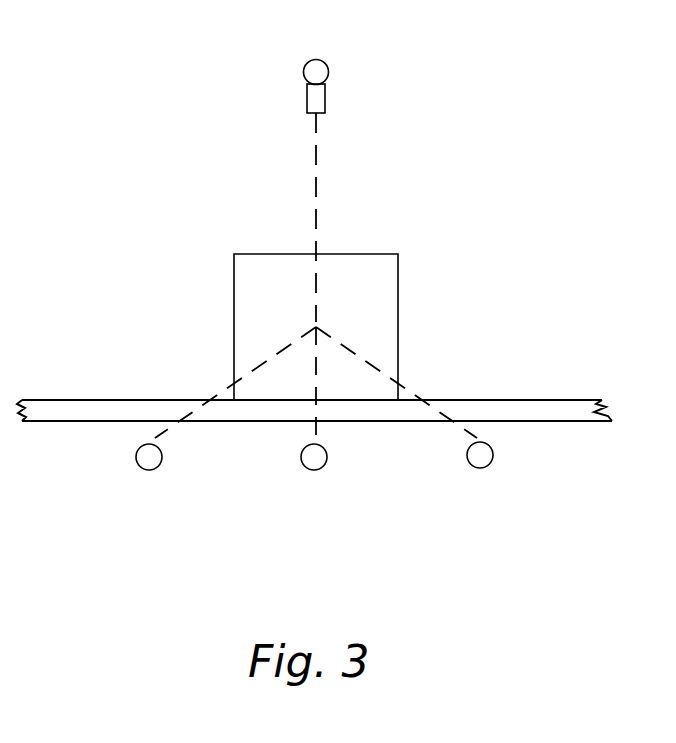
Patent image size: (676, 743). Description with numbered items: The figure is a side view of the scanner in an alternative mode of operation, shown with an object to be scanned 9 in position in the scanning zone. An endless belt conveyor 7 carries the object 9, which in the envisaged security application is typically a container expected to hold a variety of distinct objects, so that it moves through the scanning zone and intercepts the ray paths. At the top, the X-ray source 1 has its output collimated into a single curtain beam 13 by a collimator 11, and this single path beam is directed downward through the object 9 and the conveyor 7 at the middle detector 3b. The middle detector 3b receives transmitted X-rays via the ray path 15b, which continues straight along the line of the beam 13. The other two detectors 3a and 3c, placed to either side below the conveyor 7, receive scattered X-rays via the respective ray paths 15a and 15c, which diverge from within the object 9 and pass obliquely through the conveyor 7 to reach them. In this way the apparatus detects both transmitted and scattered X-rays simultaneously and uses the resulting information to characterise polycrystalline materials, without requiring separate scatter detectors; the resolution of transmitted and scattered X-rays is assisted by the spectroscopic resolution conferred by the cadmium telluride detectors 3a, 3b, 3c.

The X-ray source 1 is at (304, 68).
The collimator 11 is at (307, 101).
The single curtain beam 13 is at (315, 187).
The object to be scanned 9 is at (355, 272).
The endless belt conveyor 7 is at (523, 402).
The ray path 15a is at (253, 362).
The ray path 15b is at (306, 408).
The ray path 15c is at (373, 365).
The detector 3a is at (146, 465).
The middle detector 3b is at (312, 465).
The detector 3c is at (476, 463).